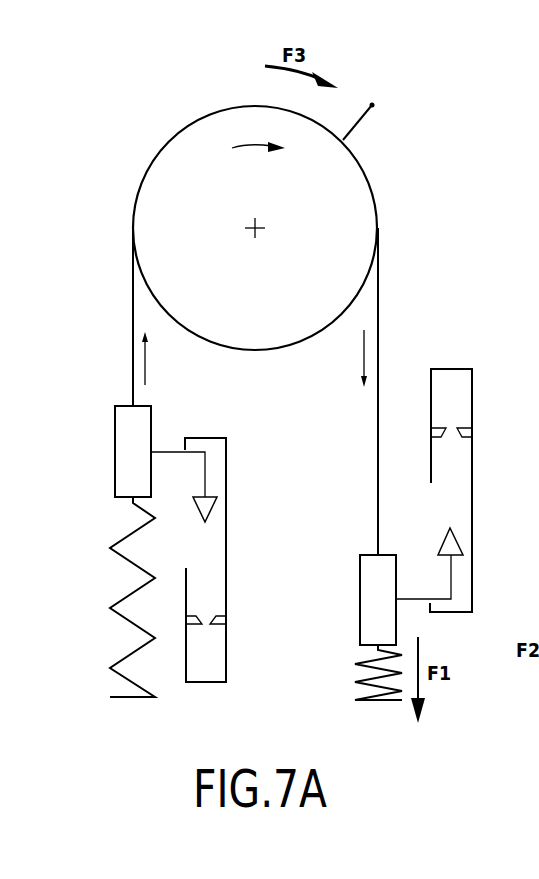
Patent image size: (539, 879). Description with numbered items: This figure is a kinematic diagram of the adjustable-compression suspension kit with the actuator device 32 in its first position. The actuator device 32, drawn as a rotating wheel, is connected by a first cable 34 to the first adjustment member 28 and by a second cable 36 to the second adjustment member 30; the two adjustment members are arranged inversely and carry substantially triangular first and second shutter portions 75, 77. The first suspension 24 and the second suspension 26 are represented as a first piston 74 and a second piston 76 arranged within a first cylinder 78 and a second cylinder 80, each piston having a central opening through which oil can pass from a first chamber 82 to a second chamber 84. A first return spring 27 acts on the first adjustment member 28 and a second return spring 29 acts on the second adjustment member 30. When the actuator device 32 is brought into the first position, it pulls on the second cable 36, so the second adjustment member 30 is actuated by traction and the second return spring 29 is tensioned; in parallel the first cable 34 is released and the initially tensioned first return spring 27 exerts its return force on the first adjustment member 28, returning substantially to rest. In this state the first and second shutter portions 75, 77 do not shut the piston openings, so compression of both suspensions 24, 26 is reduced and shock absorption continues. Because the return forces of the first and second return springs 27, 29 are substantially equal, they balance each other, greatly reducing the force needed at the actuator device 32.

The first suspension 24 is at (455, 369).
The second suspension 26 is at (208, 682).
The first return spring 27 is at (357, 662).
The first adjustment member 28 is at (360, 571).
The second return spring 29 is at (110, 667).
The second adjustment member 30 is at (115, 445).
The actuator device 32 is at (189, 123).
The first cable 34 is at (380, 335).
The second cable 36 is at (133, 335).
The first piston 74 is at (445, 438).
The first shutter portion 75 is at (447, 536).
The second piston 76 is at (222, 618).
The second shutter portion 77 is at (210, 505).
The first cylinder 78 is at (492, 420).
The second cylinder 80 is at (243, 664).
The first chamber 82 is at (203, 654).
The second chamber 84 is at (202, 568).